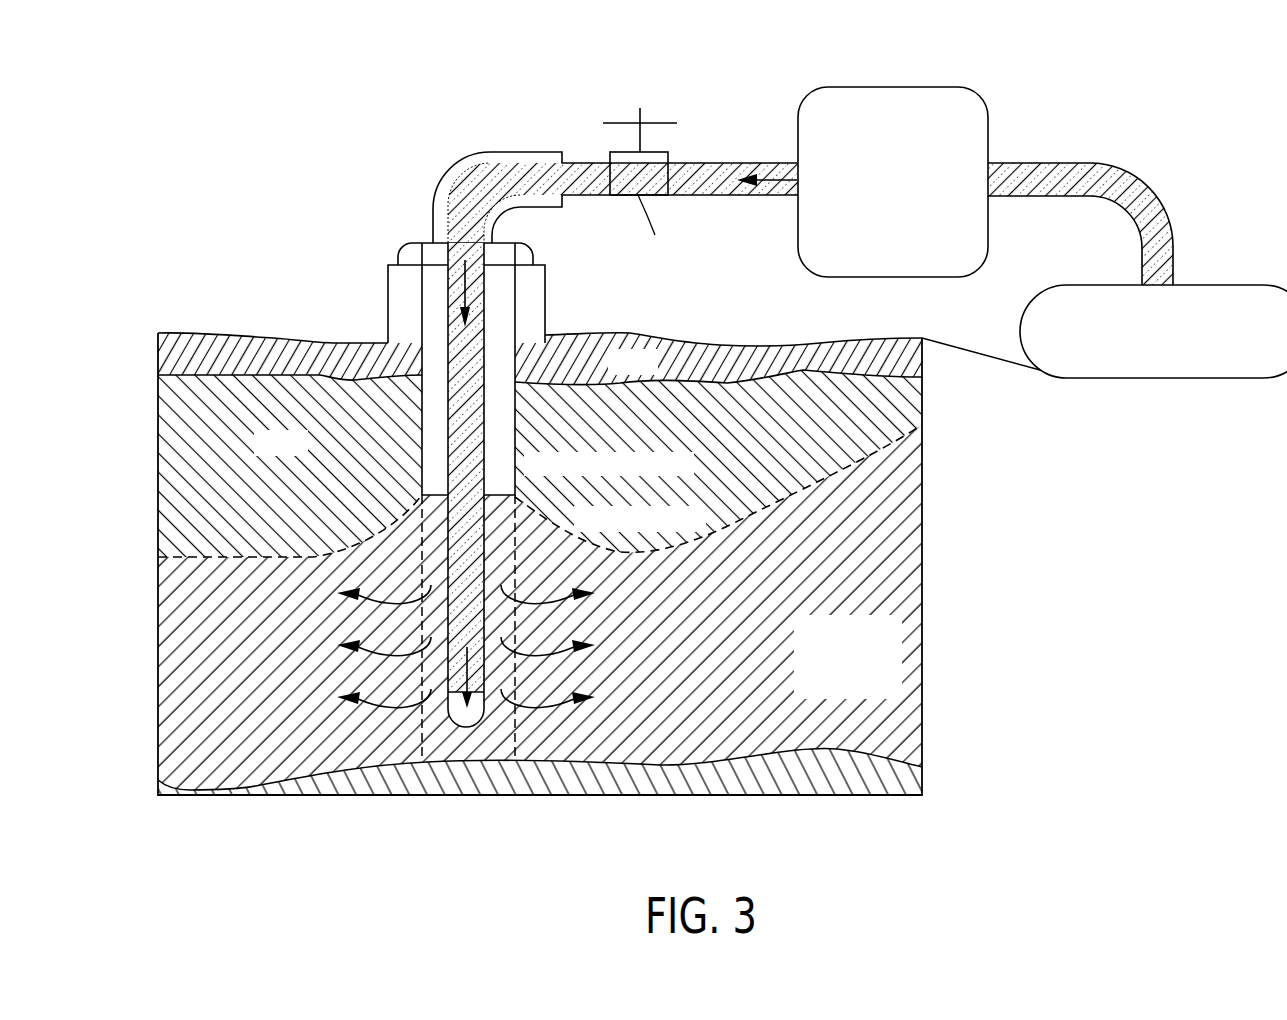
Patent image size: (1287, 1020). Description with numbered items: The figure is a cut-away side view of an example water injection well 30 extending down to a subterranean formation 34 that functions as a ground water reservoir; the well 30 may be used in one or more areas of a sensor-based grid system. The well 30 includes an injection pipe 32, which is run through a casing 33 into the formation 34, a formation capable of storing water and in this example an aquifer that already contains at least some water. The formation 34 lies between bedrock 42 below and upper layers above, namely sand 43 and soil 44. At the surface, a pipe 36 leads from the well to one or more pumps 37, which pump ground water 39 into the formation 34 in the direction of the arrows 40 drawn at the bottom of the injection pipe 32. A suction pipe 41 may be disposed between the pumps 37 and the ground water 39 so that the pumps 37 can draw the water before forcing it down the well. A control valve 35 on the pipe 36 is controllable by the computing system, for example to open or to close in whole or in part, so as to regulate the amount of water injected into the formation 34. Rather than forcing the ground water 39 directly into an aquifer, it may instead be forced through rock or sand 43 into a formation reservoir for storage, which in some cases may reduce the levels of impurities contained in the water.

The water injection well 30 is at (375, 225).
The injection pipe 32 is at (523, 462).
The casing 33 is at (507, 397).
The subterranean formation 34 is at (912, 633).
The control valve 35 is at (625, 122).
The pipe 36 is at (702, 175).
The one or more pumps 37 is at (896, 87).
The ground water 39 is at (1165, 379).
The arrows 40 is at (375, 706).
The suction pipe 41 is at (1043, 172).
The bedrock 42 is at (840, 790).
The sand 43 is at (172, 487).
The soil 44 is at (172, 347).